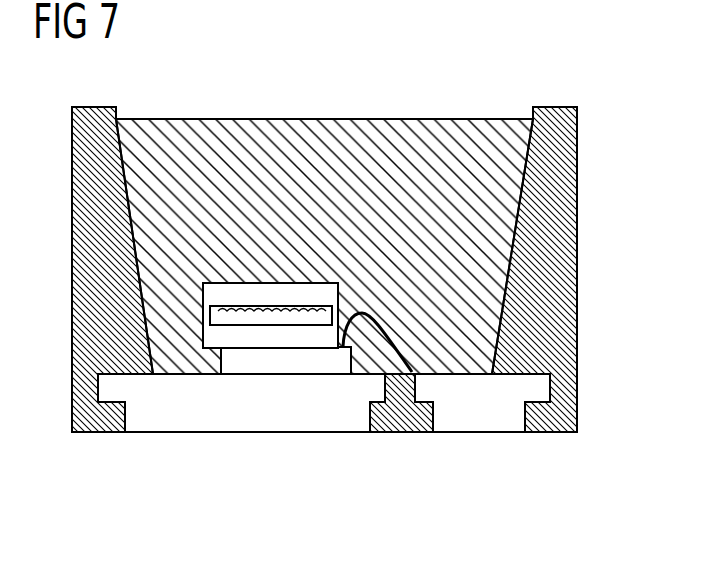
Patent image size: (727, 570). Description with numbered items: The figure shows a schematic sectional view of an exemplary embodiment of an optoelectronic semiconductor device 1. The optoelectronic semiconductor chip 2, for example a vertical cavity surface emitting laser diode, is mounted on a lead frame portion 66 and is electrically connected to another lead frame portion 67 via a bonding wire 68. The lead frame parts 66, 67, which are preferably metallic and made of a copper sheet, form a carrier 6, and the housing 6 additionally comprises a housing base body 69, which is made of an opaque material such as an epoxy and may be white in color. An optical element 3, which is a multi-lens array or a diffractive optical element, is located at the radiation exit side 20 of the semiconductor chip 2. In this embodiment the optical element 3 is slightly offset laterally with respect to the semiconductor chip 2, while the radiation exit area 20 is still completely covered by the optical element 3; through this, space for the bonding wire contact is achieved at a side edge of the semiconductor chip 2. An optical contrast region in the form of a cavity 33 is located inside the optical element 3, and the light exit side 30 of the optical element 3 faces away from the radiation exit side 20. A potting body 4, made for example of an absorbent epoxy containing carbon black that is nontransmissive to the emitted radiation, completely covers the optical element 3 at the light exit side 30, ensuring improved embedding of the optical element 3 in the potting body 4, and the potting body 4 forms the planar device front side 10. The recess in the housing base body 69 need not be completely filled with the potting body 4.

The optoelectronic semiconductor device 1 is at (588, 69).
The optoelectronic semiconductor chip 2 is at (243, 363).
The optical element 3 is at (218, 293).
The potting body 4 is at (264, 128).
The carrier 6 is at (324, 434).
The device front side 10 is at (373, 115).
The radiation exit side 20 is at (297, 352).
The light exit side 30 is at (277, 280).
The cavity 33 is at (218, 316).
The lead frame portion 66 is at (201, 423).
The lead frame portion 67 is at (482, 423).
The bonding wire 68 is at (412, 348).
The housing base body 69 is at (572, 262).